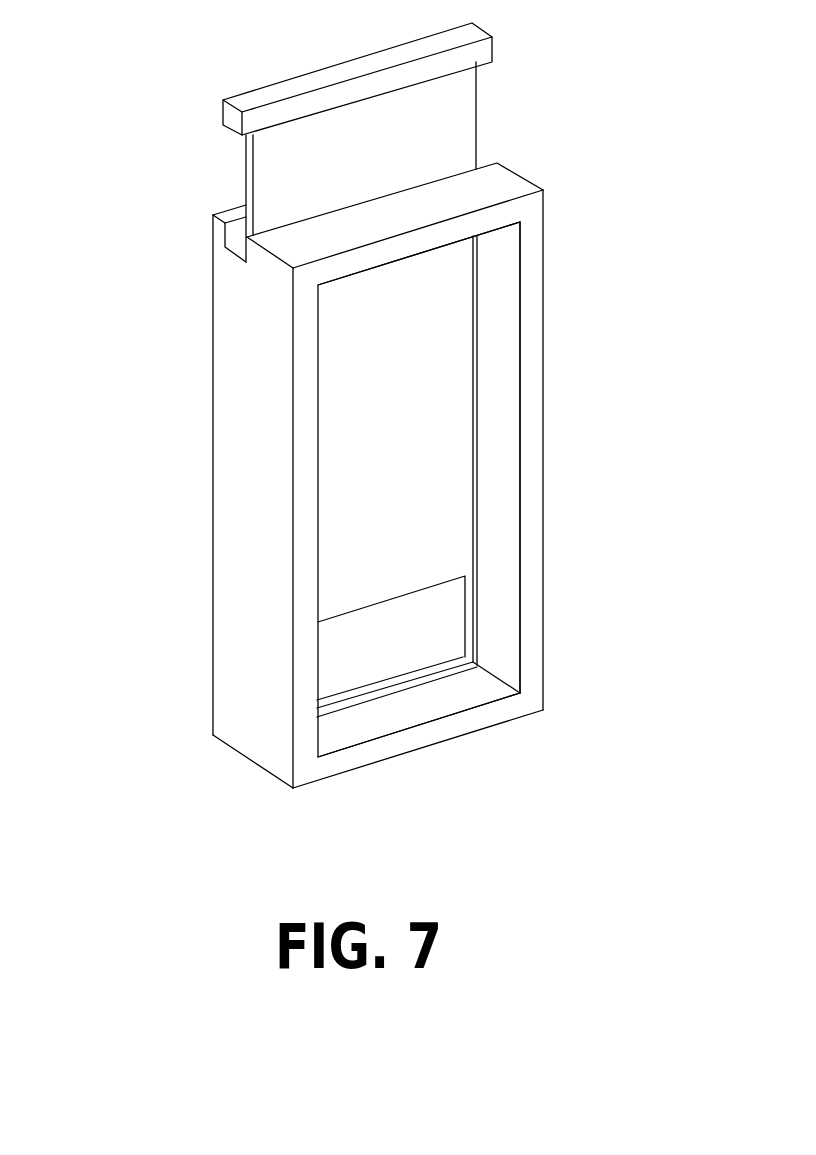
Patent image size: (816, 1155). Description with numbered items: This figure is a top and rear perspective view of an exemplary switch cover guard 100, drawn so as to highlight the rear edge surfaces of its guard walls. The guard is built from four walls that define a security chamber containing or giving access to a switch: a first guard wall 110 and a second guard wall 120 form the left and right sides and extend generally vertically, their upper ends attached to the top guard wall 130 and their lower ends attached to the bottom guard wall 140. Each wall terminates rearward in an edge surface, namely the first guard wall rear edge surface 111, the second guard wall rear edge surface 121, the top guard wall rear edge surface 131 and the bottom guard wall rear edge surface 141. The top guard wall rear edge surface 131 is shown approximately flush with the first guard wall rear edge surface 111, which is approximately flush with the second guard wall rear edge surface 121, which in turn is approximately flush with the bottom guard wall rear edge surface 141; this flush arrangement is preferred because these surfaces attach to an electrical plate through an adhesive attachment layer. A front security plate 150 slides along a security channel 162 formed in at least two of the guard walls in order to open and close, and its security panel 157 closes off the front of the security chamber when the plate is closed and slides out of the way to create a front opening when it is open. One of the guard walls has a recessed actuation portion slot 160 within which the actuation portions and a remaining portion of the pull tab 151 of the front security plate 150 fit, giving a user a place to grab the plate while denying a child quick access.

The switch cover guard 100 is at (602, 880).
The first guard wall 110 is at (502, 448).
The first guard wall rear edge surface 111 is at (528, 370).
The second guard wall 120 is at (252, 437).
The second guard wall rear edge surface 121 is at (307, 500).
The top guard wall 130 is at (423, 205).
The top guard wall rear edge surface 131 is at (423, 237).
The bottom guard wall 140 is at (397, 708).
The bottom guard wall rear edge surface 141 is at (397, 745).
The front security plate 150 is at (175, 76).
The pull tab 151 is at (370, 54).
The security panel 157 is at (390, 138).
The recessed actuation portion slot 160 is at (188, 273).
The security channel 162 is at (422, 682).